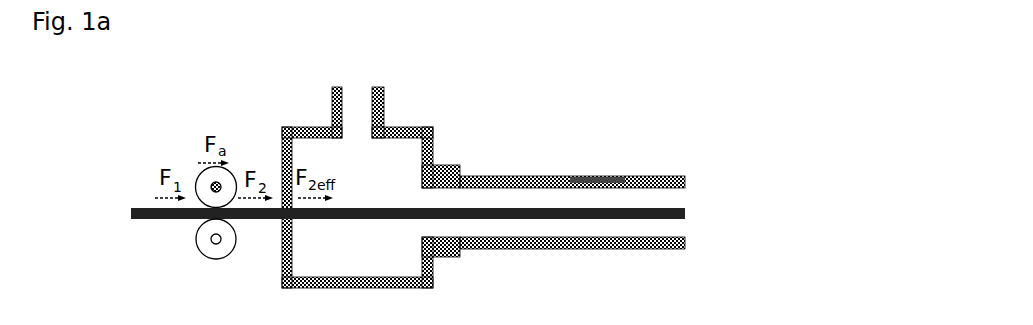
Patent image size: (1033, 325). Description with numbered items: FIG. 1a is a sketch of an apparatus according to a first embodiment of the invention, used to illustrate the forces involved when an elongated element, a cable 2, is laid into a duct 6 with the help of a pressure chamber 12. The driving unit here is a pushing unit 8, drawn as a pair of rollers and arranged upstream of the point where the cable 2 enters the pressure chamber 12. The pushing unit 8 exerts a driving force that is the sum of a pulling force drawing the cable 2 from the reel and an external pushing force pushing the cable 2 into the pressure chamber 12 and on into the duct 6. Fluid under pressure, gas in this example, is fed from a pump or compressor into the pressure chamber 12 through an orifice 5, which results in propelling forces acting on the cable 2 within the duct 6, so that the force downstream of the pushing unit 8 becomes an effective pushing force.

The cable 2 is at (408, 162).
The orifice 5 is at (362, 92).
The duct 6 is at (606, 161).
The pushing unit 8 is at (181, 233).
The pressure chamber 12 is at (404, 156).